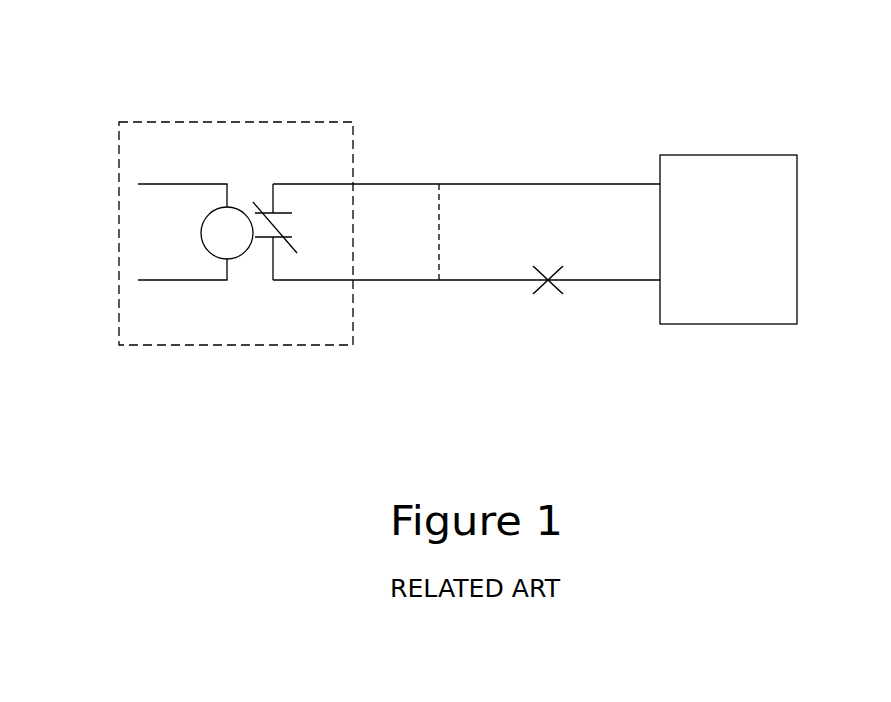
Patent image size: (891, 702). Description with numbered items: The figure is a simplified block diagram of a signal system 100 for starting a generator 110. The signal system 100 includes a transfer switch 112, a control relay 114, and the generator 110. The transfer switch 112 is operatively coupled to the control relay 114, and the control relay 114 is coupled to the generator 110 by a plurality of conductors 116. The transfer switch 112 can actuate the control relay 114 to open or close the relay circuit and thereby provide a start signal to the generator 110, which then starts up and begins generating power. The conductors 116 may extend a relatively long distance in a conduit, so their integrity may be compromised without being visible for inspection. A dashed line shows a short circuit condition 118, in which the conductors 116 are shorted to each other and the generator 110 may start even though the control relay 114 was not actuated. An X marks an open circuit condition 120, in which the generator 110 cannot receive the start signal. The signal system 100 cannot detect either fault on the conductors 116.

The signal system 100 is at (851, 70).
The generator 110 is at (752, 155).
The transfer switch 112 is at (313, 122).
The control relay 114 is at (262, 251).
The conductors 116 is at (499, 184).
The short circuit condition 118 is at (440, 236).
The open circuit condition 120 is at (549, 304).